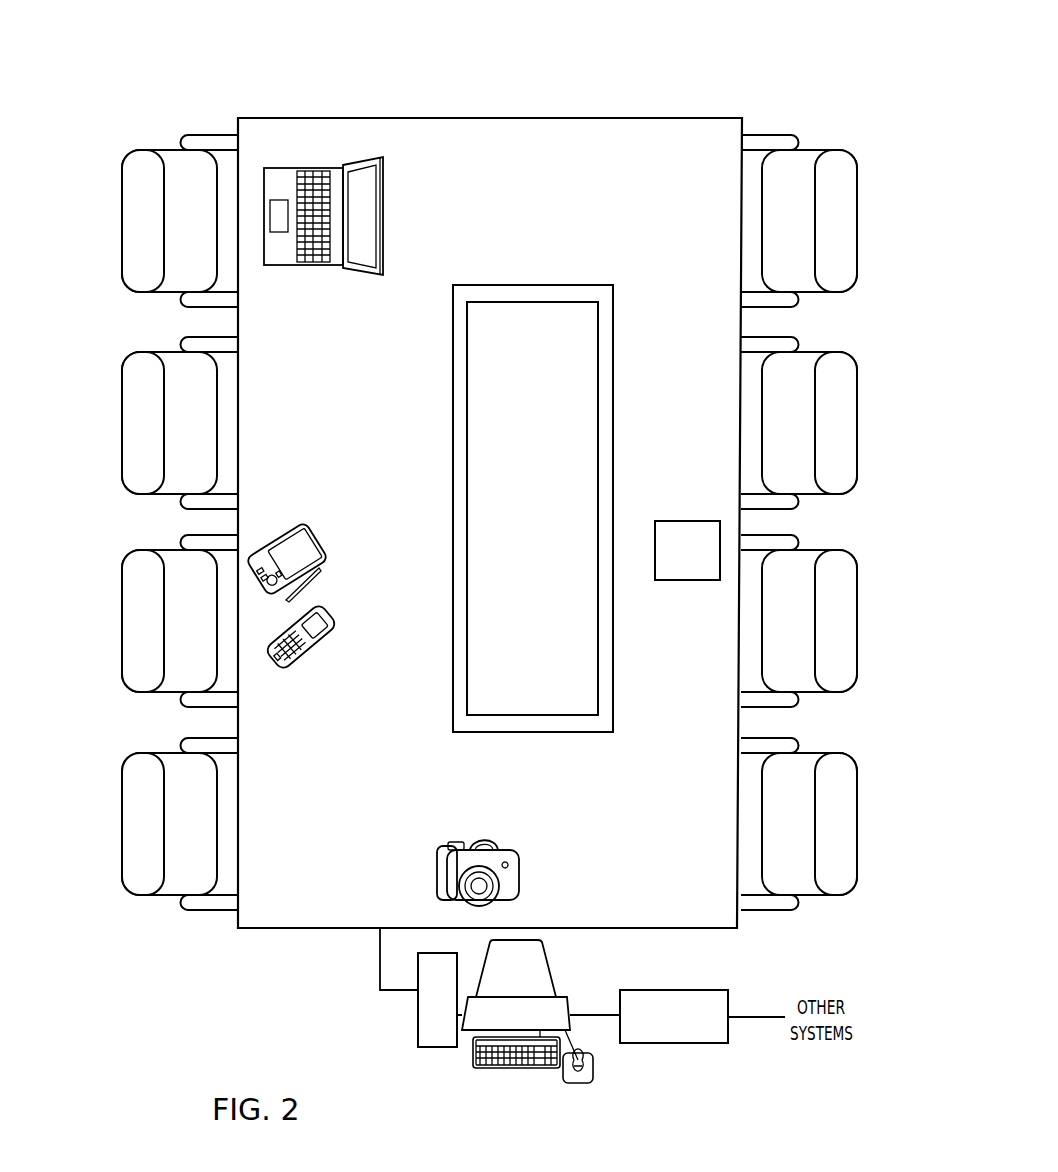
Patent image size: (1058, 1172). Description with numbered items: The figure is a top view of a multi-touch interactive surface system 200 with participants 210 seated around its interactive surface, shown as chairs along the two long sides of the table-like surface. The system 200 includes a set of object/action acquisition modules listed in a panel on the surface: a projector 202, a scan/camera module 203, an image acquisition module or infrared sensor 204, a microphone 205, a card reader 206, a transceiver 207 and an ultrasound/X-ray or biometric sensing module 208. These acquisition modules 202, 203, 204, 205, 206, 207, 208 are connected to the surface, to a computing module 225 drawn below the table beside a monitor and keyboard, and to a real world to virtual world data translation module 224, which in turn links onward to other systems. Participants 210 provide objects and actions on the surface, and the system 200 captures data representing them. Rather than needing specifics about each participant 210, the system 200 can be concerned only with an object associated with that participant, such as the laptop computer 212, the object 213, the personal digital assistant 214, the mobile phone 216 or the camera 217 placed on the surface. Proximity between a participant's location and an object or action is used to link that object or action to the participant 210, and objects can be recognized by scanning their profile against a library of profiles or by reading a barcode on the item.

The interactive surface system 200 is at (195, 67).
The participants 210 is at (122, 216).
The laptop computer 212 is at (385, 207).
The projector 202 is at (475, 321).
The scan/camera 203 is at (475, 382).
The image acquisition module / infrared sensor 204 is at (475, 446).
The microphone 205 is at (475, 509).
The card reader 206 is at (475, 572).
The transceiver 207 is at (475, 634).
The ultrasound/X-ray module 208 is at (475, 697).
The object 213 is at (690, 521).
The personal digital assistant 214 is at (290, 535).
The mobile phone 216 is at (302, 655).
The camera 217 is at (520, 872).
The real world to virtual world data translation module 224 is at (672, 990).
The computing module 225 is at (418, 1030).